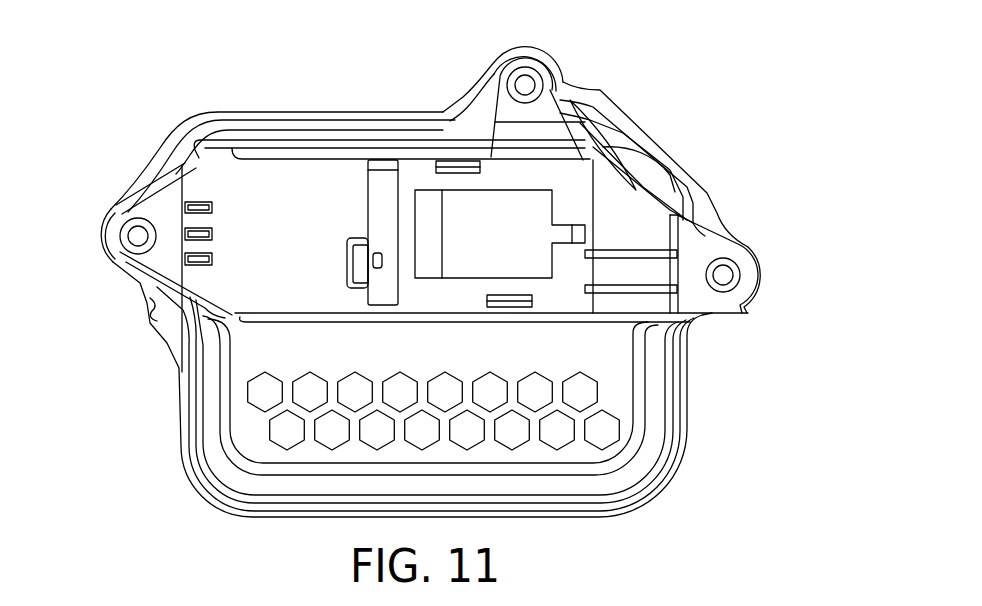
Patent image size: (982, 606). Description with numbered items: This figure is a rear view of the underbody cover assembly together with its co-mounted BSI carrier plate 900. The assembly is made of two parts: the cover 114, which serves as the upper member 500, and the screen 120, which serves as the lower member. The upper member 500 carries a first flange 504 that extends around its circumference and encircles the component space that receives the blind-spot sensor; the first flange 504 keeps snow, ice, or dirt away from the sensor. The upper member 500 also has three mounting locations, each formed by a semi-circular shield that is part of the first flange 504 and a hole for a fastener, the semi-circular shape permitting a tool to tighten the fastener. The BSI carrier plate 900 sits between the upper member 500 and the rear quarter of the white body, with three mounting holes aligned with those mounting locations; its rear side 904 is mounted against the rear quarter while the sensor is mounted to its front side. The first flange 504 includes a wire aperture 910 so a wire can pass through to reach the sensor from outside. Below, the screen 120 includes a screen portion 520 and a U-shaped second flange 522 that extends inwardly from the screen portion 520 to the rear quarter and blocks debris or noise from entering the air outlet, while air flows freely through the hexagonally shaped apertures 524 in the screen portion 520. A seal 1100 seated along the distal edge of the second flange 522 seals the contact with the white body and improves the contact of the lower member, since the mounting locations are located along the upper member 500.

The cover 114 is at (653, 146).
The screen 120 is at (630, 392).
The upper member 500 is at (203, 115).
The first flange 504 is at (305, 117).
The screen portion 520 is at (247, 420).
The second flange 522 is at (648, 475).
The apertures 524 is at (557, 440).
The BSI carrier plate 900 is at (323, 210).
The rear side 904 is at (230, 227).
The wire aperture 910 is at (147, 310).
The seal 1100 is at (253, 514).